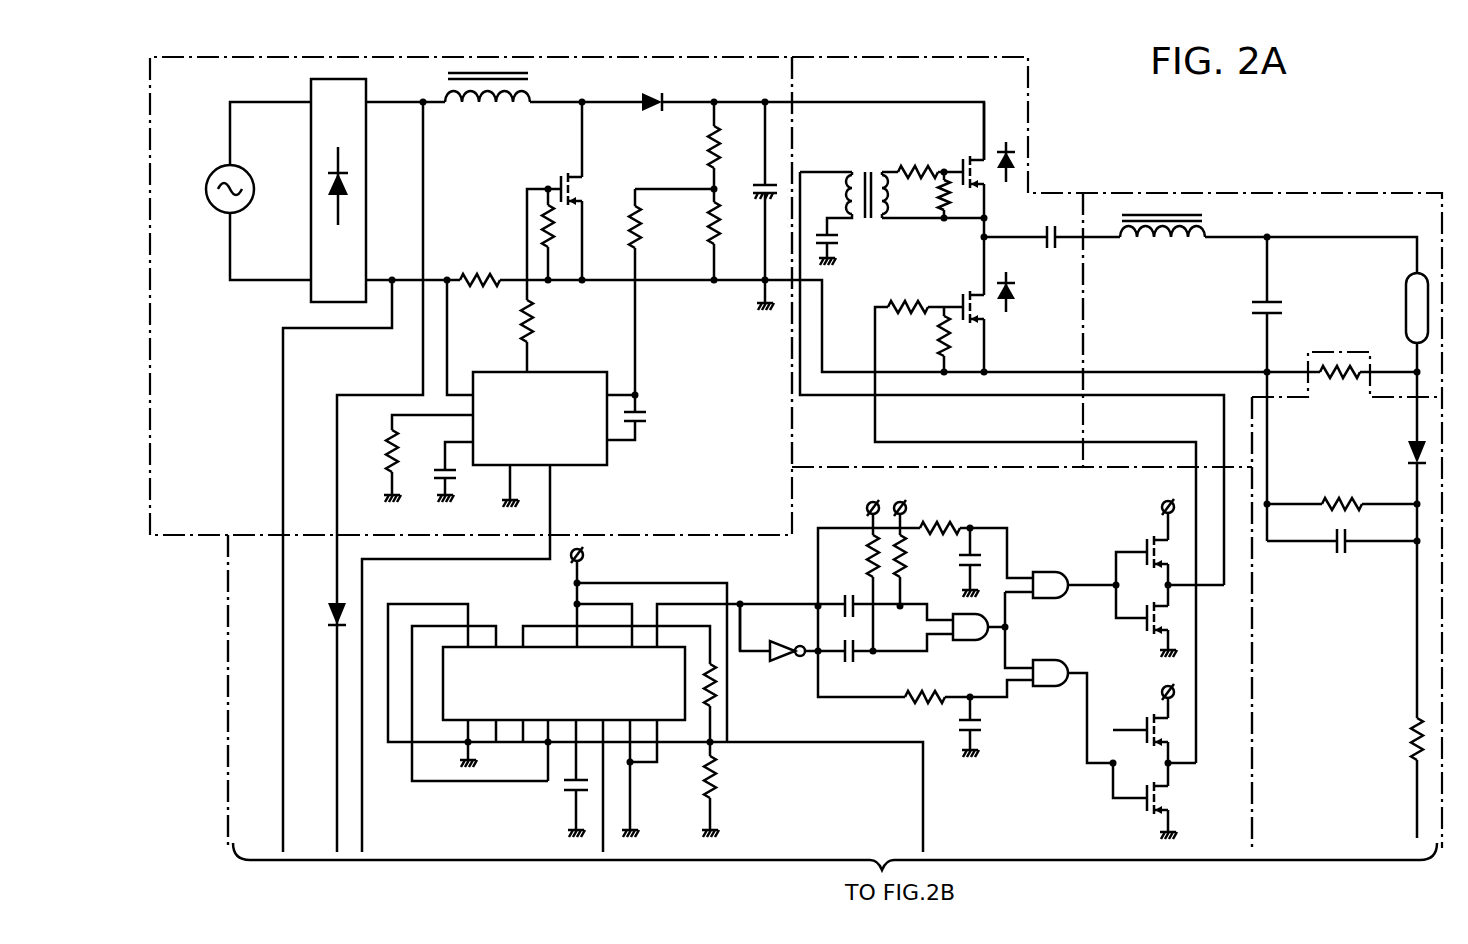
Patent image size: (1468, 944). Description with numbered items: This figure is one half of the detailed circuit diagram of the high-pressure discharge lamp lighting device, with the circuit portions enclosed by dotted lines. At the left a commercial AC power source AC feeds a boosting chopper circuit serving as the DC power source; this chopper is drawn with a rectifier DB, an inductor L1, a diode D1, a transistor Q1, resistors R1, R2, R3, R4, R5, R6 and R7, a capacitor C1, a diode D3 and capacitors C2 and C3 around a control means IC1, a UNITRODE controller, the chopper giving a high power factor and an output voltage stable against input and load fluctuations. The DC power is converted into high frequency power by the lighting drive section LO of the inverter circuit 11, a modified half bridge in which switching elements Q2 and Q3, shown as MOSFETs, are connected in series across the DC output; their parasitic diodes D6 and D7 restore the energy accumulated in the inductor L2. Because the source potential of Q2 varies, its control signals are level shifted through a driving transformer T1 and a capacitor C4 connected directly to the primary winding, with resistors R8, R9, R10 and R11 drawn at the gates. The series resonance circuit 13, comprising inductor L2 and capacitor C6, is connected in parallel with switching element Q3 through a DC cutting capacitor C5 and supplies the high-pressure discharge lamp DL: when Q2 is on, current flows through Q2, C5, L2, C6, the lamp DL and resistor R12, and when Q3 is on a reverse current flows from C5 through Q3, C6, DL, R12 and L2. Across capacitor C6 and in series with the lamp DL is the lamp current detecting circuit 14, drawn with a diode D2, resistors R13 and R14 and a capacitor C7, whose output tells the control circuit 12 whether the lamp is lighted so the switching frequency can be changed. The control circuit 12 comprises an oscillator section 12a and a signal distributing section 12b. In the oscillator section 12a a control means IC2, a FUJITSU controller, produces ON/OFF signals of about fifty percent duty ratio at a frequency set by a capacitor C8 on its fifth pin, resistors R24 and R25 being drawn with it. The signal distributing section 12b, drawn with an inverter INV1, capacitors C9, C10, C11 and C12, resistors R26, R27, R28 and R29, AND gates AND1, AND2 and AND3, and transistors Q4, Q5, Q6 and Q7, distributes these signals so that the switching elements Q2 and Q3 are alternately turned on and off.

The commercial AC power source AC is at (219, 201).
The diode bridge rectifier DB is at (311, 136).
The inductor L1 is at (487, 105).
The diode D1 is at (652, 119).
The switching transistor Q1 is at (559, 177).
The resistor R1 is at (480, 268).
The resistor R2 is at (579, 226).
The resistor R3 is at (544, 321).
The resistor R4 is at (373, 451).
The resistor R5 is at (653, 227).
The resistor R6 is at (698, 148).
The resistor R7 is at (730, 223).
The filter capacitor C1 is at (757, 192).
The control means IC1 is at (540, 418).
The capacitor C2 is at (458, 485).
The capacitor C3 is at (650, 421).
The diode D3 is at (320, 628).
The driving transformer T1 is at (867, 181).
The capacitor C4 is at (844, 242).
The resistor R8 is at (918, 159).
The resistor R9 is at (926, 197).
The switching element Q2 is at (966, 156).
The parasitic diode D6 is at (1014, 187).
The lighting drive section LO is at (995, 109).
The resistor R10 is at (909, 296).
The resistor R11 is at (923, 338).
The switching element Q3 is at (990, 318).
The parasitic diode D7 is at (1021, 295).
The DC cutting capacitor C5 is at (1051, 251).
The inverter circuit 11 is at (833, 461).
The inductor L2 is at (1162, 244).
The series resonance circuit 13 is at (1138, 334).
The capacitor C6 is at (1249, 315).
The high-pressure discharge lamp DL is at (1405, 292).
The resistor R12 is at (1347, 383).
The diode D2 is at (1397, 450).
The resistor R13 is at (1339, 493).
The capacitor C7 is at (1339, 554).
The lamp current detecting circuit 14 is at (1335, 674).
The sensing resistor R14 is at (1390, 748).
The control circuit 12 is at (410, 841).
The oscillator section 12a is at (507, 758).
The control means IC2 is at (559, 686).
The capacitor C8 is at (563, 798).
The resistor R24 is at (740, 685).
The resistor R25 is at (740, 777).
The inverter gate INV1 is at (780, 637).
The capacitor C9 is at (846, 597).
The capacitor C10 is at (852, 668).
The resistor R26 is at (852, 556).
The resistor R27 is at (922, 556).
The resistor R28 is at (944, 516).
The capacitor C11 is at (989, 573).
The resistor R29 is at (924, 711).
The capacitor C12 is at (995, 724).
The AND gate AND3 is at (964, 646).
The AND gate AND1 is at (1048, 571).
The AND gate AND2 is at (1048, 660).
The signal distributing section 12b is at (880, 698).
The driver transistor Q4 is at (1145, 551).
The driver transistor Q5 is at (1142, 628).
The driver transistor Q6 is at (1142, 721).
The driver transistor Q7 is at (1140, 813).